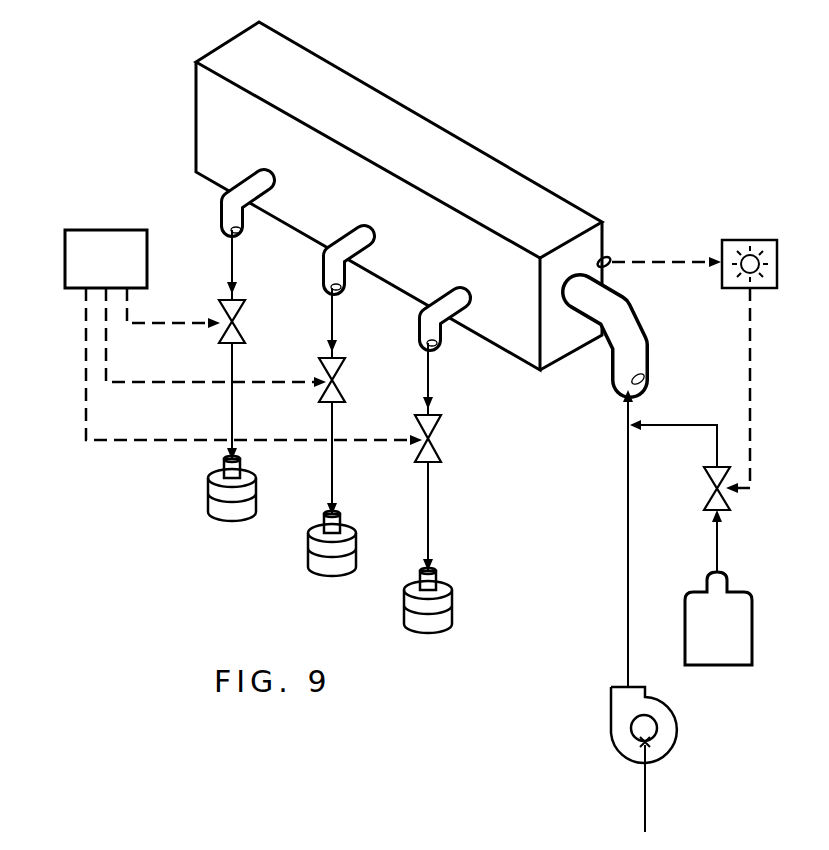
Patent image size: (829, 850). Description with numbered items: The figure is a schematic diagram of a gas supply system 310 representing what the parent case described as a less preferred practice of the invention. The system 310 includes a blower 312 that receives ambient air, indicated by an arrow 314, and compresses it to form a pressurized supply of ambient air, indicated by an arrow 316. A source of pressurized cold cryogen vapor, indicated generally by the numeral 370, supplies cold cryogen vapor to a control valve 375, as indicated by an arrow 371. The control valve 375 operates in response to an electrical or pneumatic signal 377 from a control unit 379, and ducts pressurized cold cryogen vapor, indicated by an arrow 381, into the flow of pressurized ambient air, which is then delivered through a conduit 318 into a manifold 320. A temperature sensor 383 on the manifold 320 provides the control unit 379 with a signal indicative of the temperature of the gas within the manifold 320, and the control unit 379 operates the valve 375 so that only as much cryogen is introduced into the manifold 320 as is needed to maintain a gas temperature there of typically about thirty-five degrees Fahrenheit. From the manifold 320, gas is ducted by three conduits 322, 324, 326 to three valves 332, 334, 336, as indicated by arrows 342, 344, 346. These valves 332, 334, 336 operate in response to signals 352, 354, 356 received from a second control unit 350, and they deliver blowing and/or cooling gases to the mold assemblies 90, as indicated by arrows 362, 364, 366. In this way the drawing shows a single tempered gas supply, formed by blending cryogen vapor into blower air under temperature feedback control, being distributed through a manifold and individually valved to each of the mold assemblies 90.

The gas supply system 310 is at (560, 118).
The manifold 320 is at (603, 232).
The temperature sensor 383 is at (609, 262).
The control unit 379 is at (735, 240).
The electrical or pneumatic signal 377 is at (752, 380).
The conduit 318 is at (632, 322).
The pressurized supply of ambient air 316 is at (630, 448).
The pressurized cold cryogen vapor flow 381 is at (664, 425).
The control valve 375 is at (706, 488).
The cold cryogen vapor supply flow 371 is at (718, 546).
The source of pressurized cold cryogen vapor 370 is at (745, 588).
The blower 312 is at (657, 698).
The ambient air 314 is at (645, 791).
The conduit 326 is at (221, 200).
The conduit 324 is at (325, 262).
The conduit 322 is at (424, 324).
The gas flow arrow 346 is at (231, 252).
The gas flow arrow 344 is at (331, 316).
The gas flow arrow 342 is at (427, 373).
The valve 336 is at (222, 308).
The valve 334 is at (322, 366).
The valve 332 is at (418, 418).
The gas delivery arrow 366 is at (231, 410).
The gas delivery arrow 364 is at (331, 483).
The gas delivery arrow 362 is at (427, 512).
The mold assembly 90 is at (243, 464).
The control unit 350 is at (65, 253).
The signal 356 is at (196, 332).
The signal 354 is at (170, 384).
The signal 352 is at (156, 442).